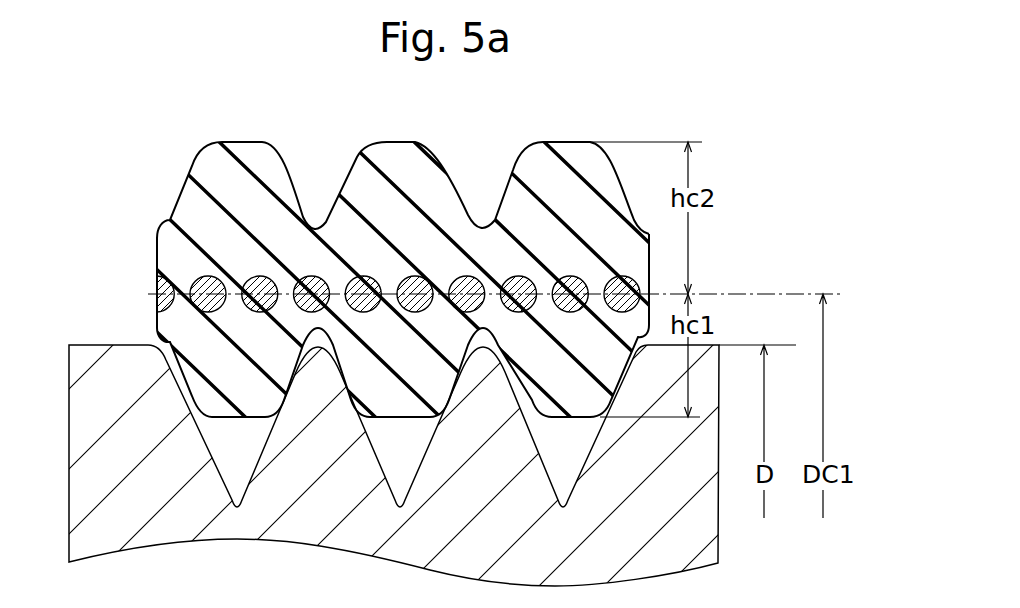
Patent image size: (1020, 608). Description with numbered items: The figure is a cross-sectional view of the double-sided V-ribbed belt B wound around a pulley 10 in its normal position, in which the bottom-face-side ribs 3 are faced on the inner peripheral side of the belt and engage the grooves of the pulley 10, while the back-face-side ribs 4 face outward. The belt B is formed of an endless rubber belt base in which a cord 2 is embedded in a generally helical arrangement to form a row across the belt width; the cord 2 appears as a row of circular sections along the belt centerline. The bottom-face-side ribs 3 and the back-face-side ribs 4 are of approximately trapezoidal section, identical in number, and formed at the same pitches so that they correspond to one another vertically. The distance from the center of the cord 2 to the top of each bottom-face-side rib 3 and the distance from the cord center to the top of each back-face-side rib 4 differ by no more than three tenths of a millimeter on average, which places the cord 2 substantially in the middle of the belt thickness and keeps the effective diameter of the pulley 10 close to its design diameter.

The V-ribbed belt B is at (195, 140).
The back-face-side ribs 4 is at (358, 143).
The cord 2 is at (478, 276).
The bottom-face-side ribs 3 is at (241, 392).
The core (cylindrical body) 10 is at (719, 542).